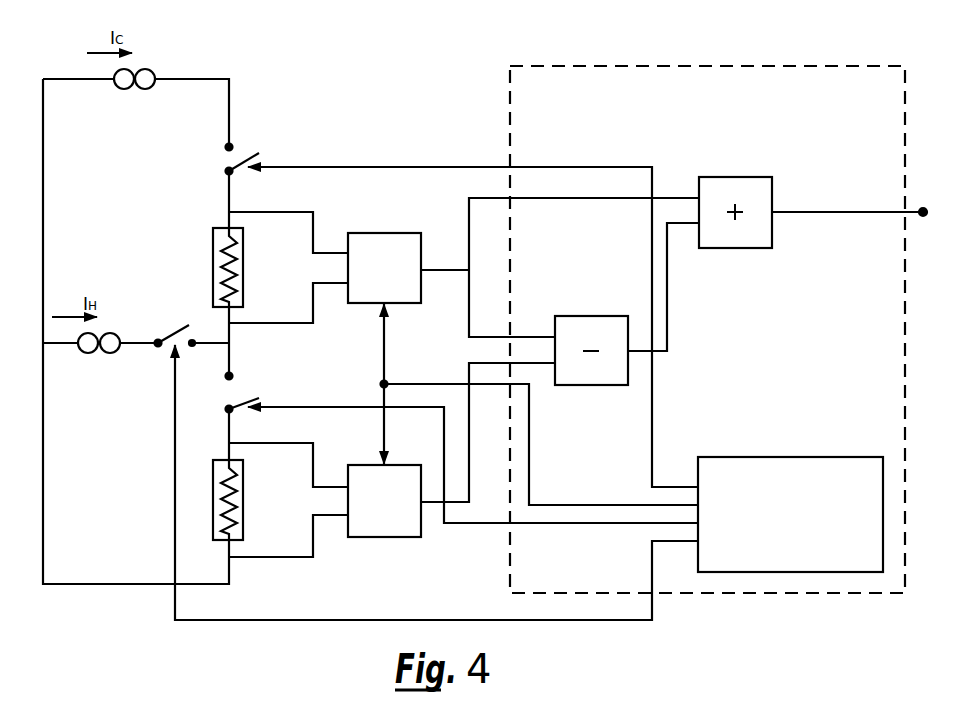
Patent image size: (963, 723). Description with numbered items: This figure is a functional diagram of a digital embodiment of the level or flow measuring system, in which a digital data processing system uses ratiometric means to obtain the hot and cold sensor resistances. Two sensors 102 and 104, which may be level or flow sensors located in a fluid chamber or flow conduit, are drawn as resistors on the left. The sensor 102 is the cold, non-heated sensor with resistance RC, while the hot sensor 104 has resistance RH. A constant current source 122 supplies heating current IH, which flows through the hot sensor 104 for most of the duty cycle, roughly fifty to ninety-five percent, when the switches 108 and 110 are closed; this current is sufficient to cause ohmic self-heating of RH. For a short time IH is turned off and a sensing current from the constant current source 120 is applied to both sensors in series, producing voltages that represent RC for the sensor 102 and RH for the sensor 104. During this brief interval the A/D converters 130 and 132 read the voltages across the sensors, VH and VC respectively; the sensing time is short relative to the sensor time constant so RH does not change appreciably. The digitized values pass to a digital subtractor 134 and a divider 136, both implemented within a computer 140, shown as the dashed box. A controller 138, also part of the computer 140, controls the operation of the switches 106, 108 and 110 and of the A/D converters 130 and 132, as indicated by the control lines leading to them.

The sensor 102 is at (213, 240).
The hot sensor 104 is at (243, 528).
The switch 106 is at (234, 163).
The switch 108 is at (178, 333).
The switch 110 is at (247, 397).
The constant current source 120 is at (158, 72).
The constant current source 122 is at (110, 354).
The A/D converter 130 is at (385, 233).
The A/D converter 132 is at (406, 465).
The digital subtractor 134 is at (588, 316).
The divider 136 is at (737, 177).
The controller 138 is at (787, 457).
The computer 140 is at (762, 66).